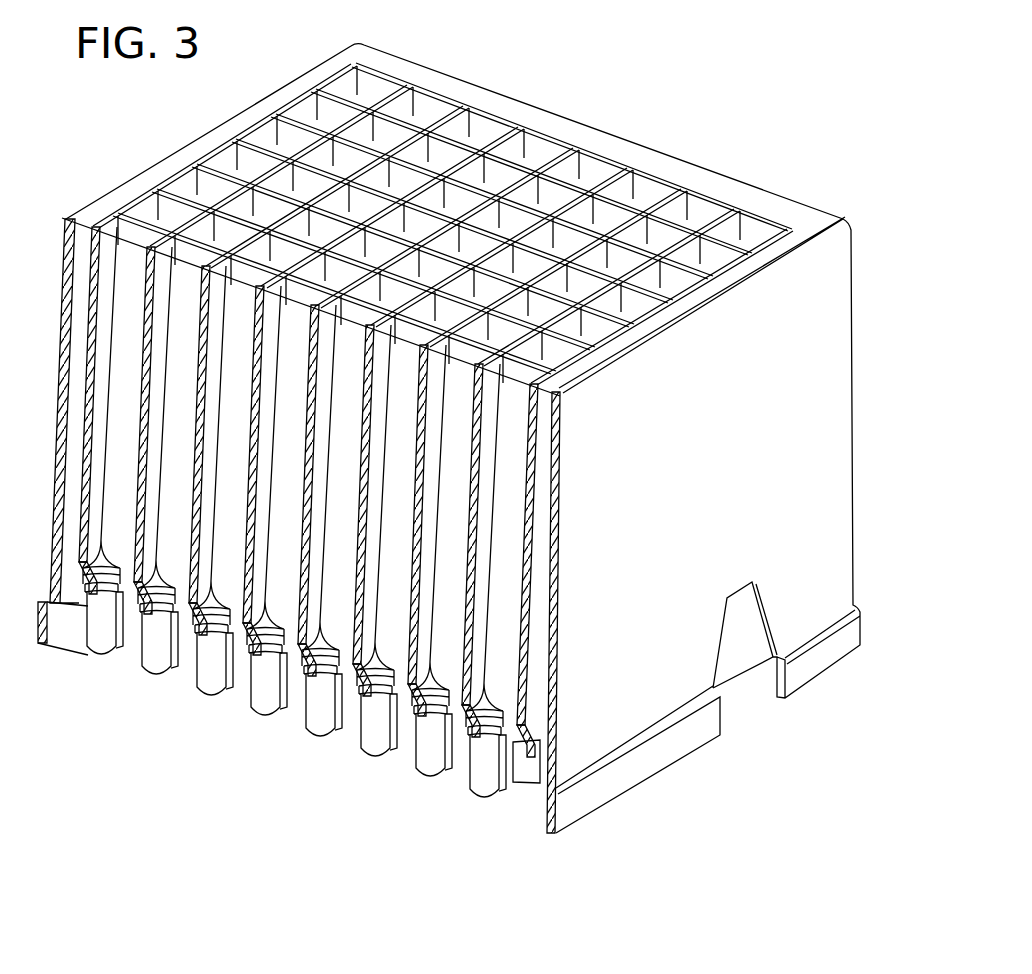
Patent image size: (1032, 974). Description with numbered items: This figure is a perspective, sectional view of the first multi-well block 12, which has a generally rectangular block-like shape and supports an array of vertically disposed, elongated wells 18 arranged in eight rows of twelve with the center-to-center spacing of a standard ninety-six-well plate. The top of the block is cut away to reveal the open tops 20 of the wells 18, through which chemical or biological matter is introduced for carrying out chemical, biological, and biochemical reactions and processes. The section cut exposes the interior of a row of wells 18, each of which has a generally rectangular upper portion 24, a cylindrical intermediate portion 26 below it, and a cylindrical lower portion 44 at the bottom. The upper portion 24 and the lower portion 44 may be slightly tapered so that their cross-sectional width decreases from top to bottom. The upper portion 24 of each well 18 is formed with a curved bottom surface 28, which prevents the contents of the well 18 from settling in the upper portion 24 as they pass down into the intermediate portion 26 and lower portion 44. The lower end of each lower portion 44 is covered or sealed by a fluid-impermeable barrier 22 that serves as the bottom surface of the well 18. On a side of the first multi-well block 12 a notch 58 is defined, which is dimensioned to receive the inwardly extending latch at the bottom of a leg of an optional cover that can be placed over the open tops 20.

The first multi-well block 12 is at (852, 462).
The wells 18 is at (713, 258).
The open tops 20 is at (647, 187).
The fluid-impermeable barriers 22 is at (476, 790).
The upper portion 24 is at (507, 483).
The cylindrical intermediate portion 26 is at (500, 724).
The curved bottom surface 28 is at (500, 693).
The cylindrical lower portion 44 is at (336, 748).
The notch 58 is at (743, 618).